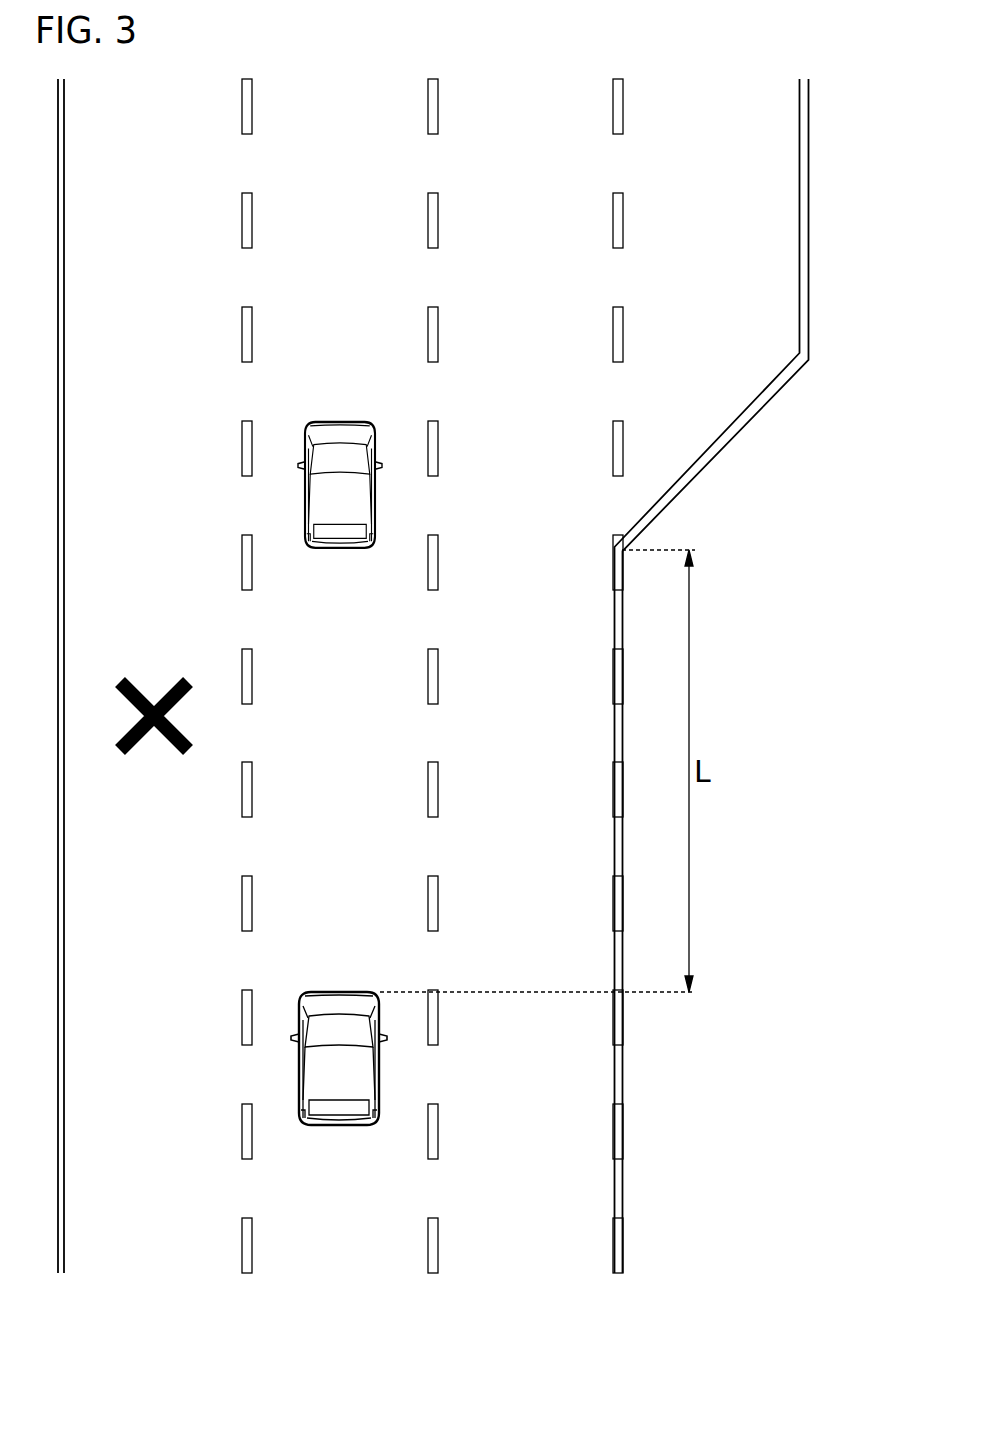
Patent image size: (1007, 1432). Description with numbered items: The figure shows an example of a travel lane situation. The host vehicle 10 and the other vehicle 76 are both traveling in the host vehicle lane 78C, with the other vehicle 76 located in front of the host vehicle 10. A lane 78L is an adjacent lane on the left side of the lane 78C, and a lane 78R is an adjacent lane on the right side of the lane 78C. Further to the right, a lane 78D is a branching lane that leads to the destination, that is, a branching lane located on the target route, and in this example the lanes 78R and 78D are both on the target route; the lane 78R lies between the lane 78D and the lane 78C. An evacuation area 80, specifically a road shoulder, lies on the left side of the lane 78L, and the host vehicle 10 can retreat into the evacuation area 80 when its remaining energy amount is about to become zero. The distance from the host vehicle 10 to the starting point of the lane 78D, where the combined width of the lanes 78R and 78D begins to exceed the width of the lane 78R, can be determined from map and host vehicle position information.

The host vehicle 10 is at (322, 992).
The other vehicle 76 is at (350, 421).
The lane 78L is at (149, 1242).
The lane 78C is at (337, 1242).
The lane 78R is at (524, 1242).
The lane 78D is at (717, 385).
The evacuation area 80 is at (37, 853).